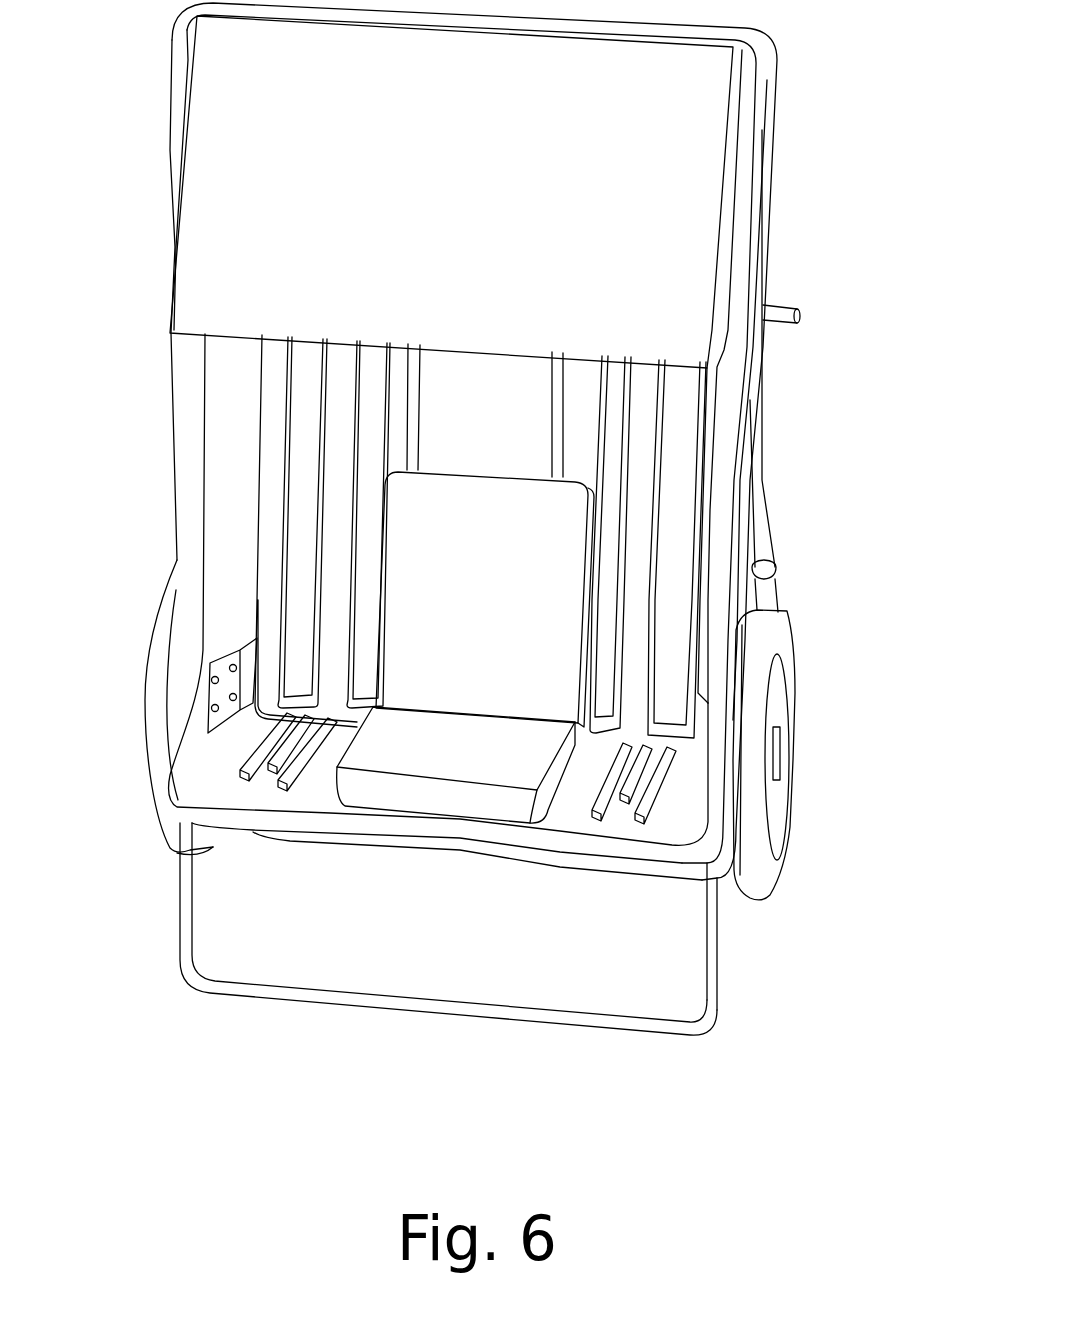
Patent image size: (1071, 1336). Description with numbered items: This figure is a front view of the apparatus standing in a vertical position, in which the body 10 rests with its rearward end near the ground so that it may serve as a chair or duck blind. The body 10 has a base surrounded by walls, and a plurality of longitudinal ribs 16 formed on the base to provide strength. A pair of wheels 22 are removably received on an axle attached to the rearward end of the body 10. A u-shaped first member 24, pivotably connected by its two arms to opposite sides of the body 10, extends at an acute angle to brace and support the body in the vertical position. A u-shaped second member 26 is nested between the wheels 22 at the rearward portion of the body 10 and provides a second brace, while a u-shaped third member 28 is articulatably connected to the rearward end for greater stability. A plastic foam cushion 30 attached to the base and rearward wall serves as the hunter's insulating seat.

The body 10 is at (827, 360).
The longitudinal ribs 16 is at (703, 482).
The wheels 22 is at (143, 717).
The first member 24 is at (772, 538).
The second member 26 is at (725, 880).
The third member 28 is at (293, 997).
The cushion 30 is at (433, 800).